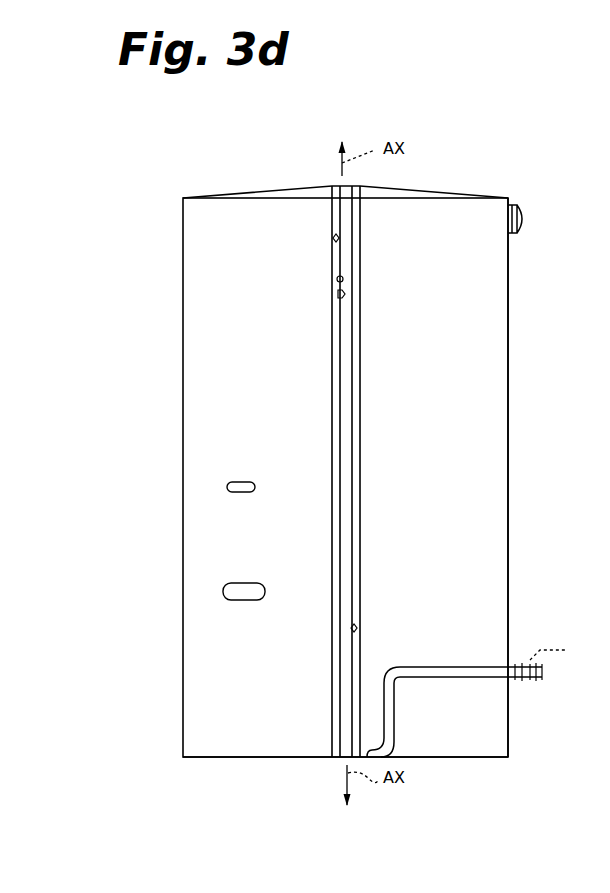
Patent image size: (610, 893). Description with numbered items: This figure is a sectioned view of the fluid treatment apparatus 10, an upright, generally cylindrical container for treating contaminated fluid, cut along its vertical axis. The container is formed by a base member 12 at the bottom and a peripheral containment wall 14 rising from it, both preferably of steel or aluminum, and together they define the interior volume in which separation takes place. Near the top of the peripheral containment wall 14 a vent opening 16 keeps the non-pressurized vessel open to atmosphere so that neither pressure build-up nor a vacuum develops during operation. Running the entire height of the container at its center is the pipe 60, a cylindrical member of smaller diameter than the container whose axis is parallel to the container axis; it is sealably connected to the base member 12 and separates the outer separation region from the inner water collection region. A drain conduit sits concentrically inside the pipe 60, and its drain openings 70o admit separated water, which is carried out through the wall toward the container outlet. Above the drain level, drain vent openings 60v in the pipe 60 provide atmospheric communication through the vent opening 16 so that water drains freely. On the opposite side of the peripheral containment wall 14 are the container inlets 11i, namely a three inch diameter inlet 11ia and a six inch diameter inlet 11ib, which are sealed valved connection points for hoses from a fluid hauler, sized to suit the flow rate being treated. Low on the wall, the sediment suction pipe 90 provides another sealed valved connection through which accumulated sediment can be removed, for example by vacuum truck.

The fluid treatment apparatus 10 is at (455, 132).
The base member 12 is at (219, 757).
The peripheral containment wall 14 is at (508, 518).
The vent openings 16 is at (538, 200).
The pipe 60 is at (366, 426).
The drain vent openings 60v is at (328, 238).
The drain openings 70o is at (335, 280).
The container inlets 11i is at (178, 514).
The three inch diameter inlet 11ia is at (216, 473).
The six inch diameter inlet 11ib is at (216, 575).
The sediment suction pipe 90 is at (534, 637).